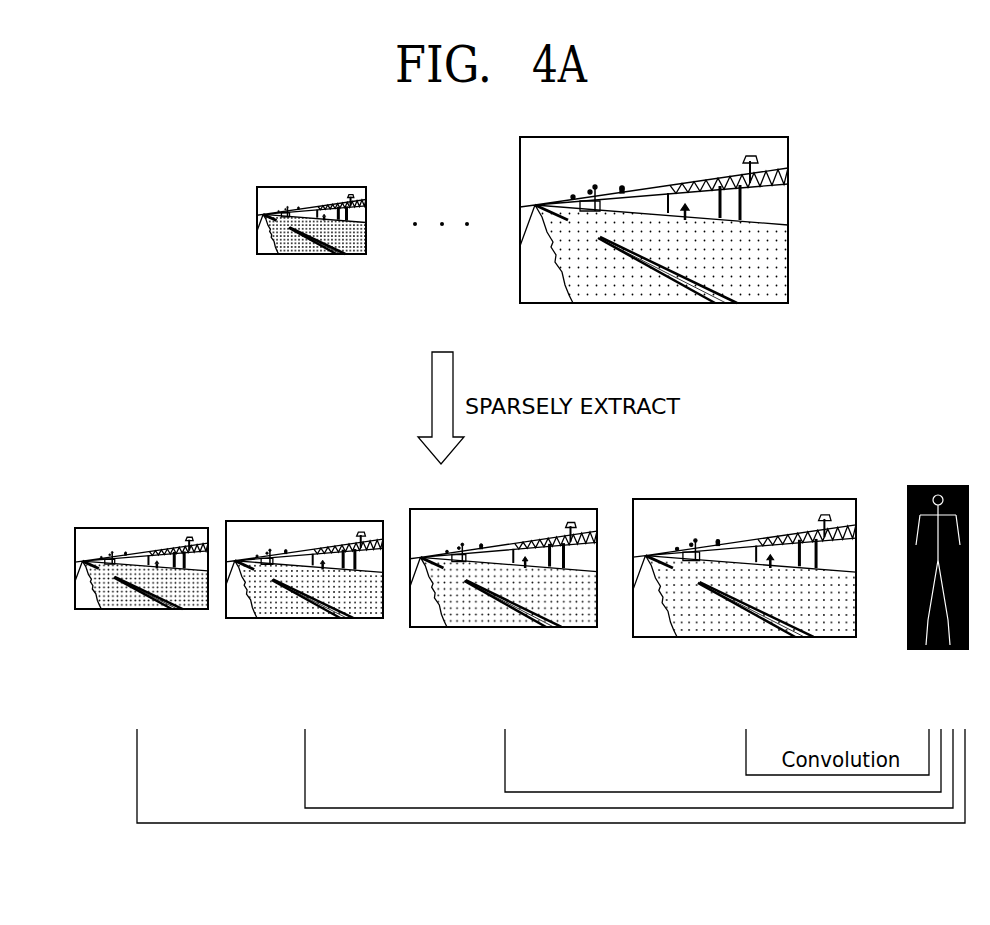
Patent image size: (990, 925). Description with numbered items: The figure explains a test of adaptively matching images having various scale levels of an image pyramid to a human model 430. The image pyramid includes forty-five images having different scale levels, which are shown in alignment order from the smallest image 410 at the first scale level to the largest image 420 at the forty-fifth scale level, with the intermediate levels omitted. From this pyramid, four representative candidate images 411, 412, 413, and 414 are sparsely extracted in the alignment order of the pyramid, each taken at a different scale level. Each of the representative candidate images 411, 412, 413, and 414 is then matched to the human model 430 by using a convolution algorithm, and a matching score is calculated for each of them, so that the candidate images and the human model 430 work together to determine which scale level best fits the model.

The input image at scale 1 410 is at (312, 255).
The input image at scale 45 420 is at (655, 304).
The representative candidate image 411 is at (137, 610).
The representative candidate image 412 is at (303, 619).
The representative candidate image 413 is at (502, 628).
The representative candidate image 414 is at (744, 638).
The human model 430 is at (937, 652).